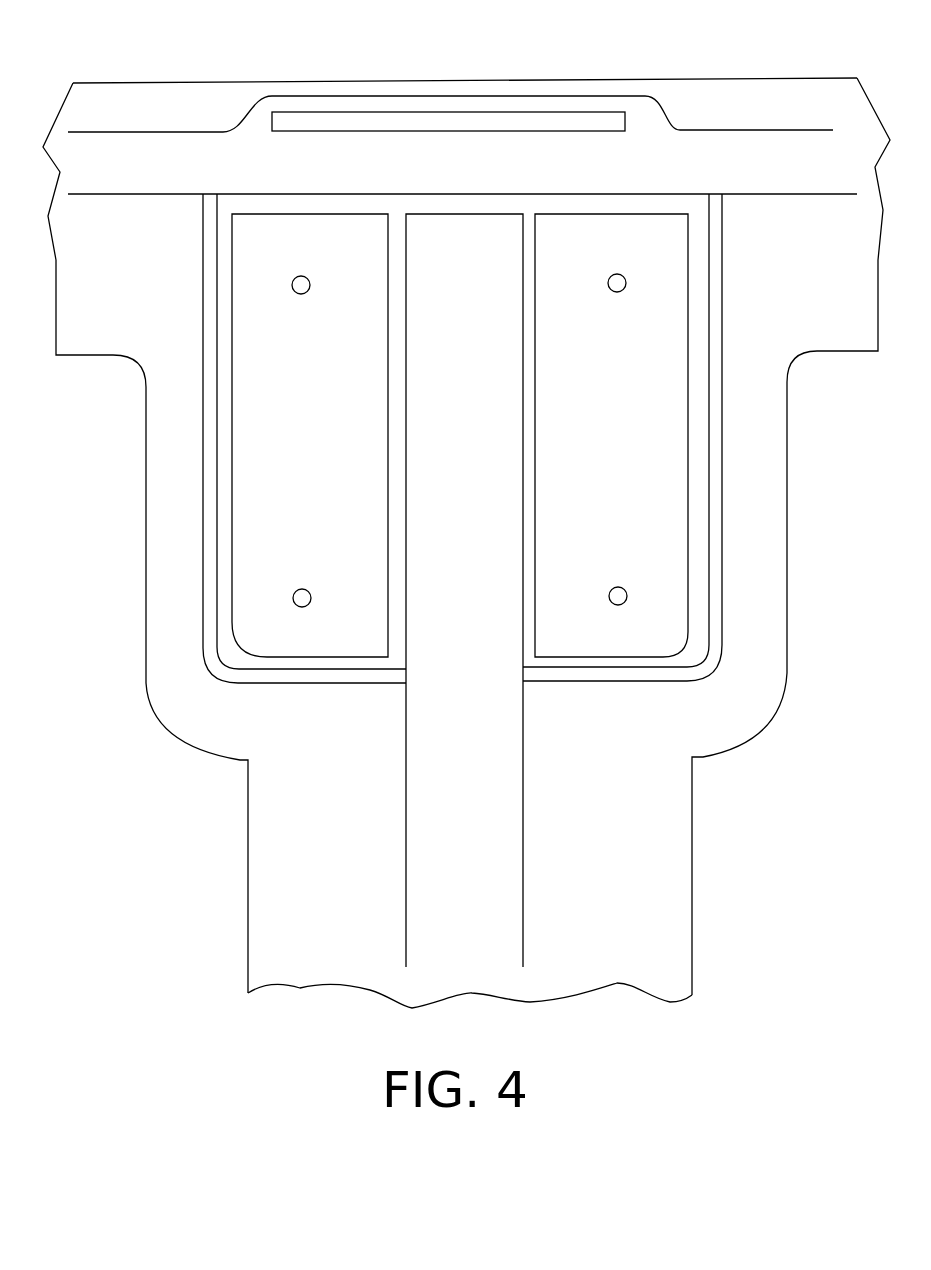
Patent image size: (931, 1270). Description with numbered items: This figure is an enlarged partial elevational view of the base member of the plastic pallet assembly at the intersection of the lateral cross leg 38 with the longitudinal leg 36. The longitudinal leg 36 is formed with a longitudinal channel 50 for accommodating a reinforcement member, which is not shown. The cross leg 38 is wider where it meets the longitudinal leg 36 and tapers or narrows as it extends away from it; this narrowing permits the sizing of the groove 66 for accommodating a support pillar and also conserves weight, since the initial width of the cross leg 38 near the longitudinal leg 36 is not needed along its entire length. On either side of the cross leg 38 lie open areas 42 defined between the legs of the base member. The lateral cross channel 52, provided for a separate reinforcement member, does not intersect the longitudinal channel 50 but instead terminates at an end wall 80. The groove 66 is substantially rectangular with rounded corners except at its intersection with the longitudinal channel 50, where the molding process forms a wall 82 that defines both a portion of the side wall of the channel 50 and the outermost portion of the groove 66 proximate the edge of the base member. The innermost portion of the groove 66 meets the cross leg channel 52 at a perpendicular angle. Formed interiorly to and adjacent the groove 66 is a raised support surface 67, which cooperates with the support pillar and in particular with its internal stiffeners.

The longitudinal leg 36 is at (120, 242).
The lateral cross leg 38 is at (339, 888).
The open area 42 is at (105, 746).
The longitudinal channel 50 is at (157, 176).
The lateral cross channel 52 is at (475, 582).
The groove 66 is at (373, 103).
The raised support surface 67 is at (225, 377).
The end wall 80 is at (482, 205).
The wall 82 is at (480, 122).